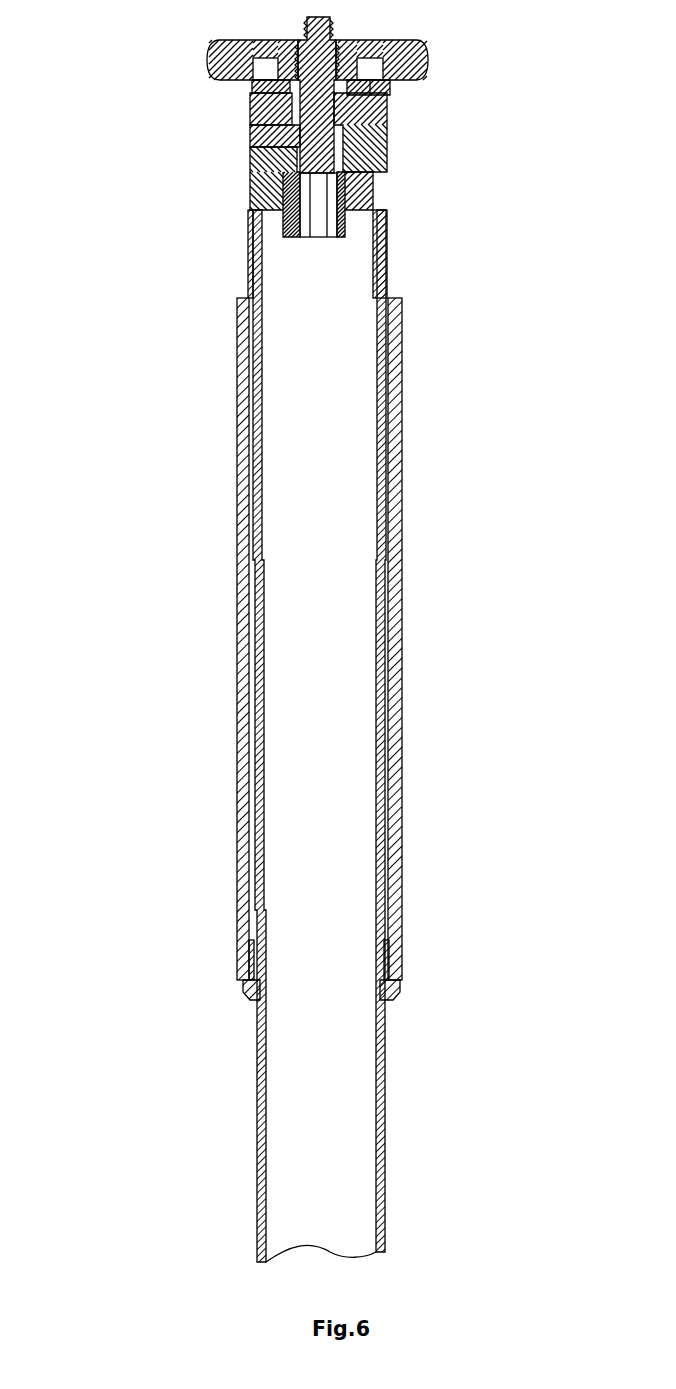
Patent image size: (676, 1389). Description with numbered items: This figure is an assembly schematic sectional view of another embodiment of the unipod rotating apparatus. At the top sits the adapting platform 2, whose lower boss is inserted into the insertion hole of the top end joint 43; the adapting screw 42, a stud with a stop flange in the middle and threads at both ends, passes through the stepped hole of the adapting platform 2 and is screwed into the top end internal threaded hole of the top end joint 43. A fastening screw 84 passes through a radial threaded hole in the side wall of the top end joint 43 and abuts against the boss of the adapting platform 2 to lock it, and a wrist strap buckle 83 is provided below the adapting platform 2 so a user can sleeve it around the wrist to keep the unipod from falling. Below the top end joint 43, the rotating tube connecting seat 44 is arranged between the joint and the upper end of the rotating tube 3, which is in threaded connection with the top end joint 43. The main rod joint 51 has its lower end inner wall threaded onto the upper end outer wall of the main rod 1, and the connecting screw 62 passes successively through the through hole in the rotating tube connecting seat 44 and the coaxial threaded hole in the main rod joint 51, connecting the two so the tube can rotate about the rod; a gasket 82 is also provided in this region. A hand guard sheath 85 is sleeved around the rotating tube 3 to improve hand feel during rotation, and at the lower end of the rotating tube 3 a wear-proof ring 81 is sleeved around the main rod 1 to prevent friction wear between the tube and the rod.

The main rod 1 is at (381, 492).
The adapting platform 2 is at (430, 65).
The rotating tube 3 is at (243, 438).
The adapting screw 42 is at (250, 113).
The top end joint 43 is at (250, 140).
The rotating tube connecting seat 44 is at (250, 178).
The main rod joint 51 is at (388, 205).
The connecting screw 62 is at (388, 165).
The wear-proof ring 81 is at (245, 995).
The gasket 82 is at (388, 185).
The wrist strap buckle 83 is at (252, 85).
The fastening screw 84 is at (387, 115).
The hand guard sheath 85 is at (243, 557).